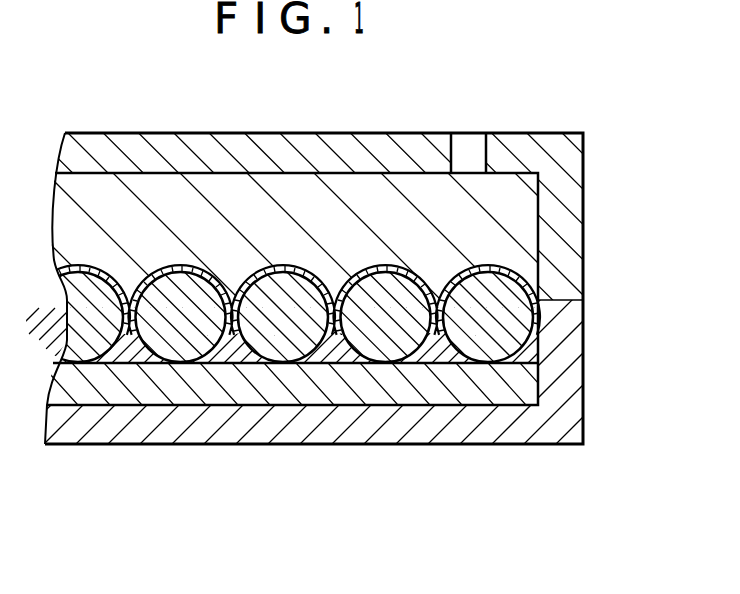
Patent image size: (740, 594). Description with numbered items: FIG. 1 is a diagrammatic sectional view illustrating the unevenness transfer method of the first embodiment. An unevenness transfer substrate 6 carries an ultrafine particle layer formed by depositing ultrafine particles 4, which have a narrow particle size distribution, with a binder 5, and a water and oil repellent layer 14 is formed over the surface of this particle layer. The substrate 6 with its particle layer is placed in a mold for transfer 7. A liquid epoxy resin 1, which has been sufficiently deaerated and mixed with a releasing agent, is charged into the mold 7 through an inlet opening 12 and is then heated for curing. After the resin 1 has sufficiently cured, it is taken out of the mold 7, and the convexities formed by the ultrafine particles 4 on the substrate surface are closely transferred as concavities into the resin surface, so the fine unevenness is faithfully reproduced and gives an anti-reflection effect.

The liquid epoxy resin 1 is at (518, 215).
The ultrafine particles 4 is at (520, 320).
The binder 5 is at (532, 348).
The substrate 6 is at (527, 388).
The mold for transfer 7 is at (566, 168).
The inlet opening 12 is at (468, 143).
The water and oil repellent layer 14 is at (510, 266).